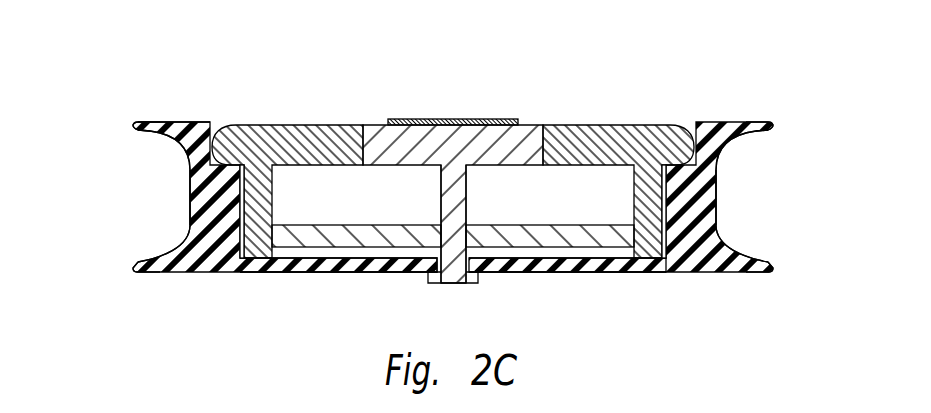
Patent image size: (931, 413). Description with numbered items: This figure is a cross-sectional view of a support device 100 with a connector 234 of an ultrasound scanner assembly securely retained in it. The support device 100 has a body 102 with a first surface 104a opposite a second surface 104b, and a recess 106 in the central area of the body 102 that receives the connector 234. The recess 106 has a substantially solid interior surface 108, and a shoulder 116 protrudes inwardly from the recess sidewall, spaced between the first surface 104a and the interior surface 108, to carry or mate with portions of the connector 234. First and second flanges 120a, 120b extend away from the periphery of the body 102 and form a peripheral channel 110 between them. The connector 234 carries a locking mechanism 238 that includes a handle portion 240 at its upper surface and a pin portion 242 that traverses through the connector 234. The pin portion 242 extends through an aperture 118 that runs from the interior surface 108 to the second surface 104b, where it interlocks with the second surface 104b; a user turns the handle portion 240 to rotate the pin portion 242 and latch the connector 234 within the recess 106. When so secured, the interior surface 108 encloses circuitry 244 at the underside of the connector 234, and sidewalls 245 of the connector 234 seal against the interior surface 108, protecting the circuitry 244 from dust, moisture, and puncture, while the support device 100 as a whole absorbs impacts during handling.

The support device 100 is at (138, 60).
The body 102 is at (716, 122).
The first surface 104a is at (198, 121).
The second surface 104b is at (275, 273).
The recess 106 is at (221, 119).
The interior surface 108 is at (345, 273).
The peripheral channel 110 is at (190, 193).
The shoulder 116 is at (190, 178).
The aperture 118 is at (424, 284).
The first flange 120a is at (137, 124).
The second flange 120b is at (135, 273).
The connector 234 is at (618, 124).
The locking mechanism 238 is at (378, 124).
The handle portion 240 is at (428, 119).
The pin portion 242 is at (467, 200).
The circuitry 244 is at (325, 225).
The sidewalls 245 is at (259, 252).